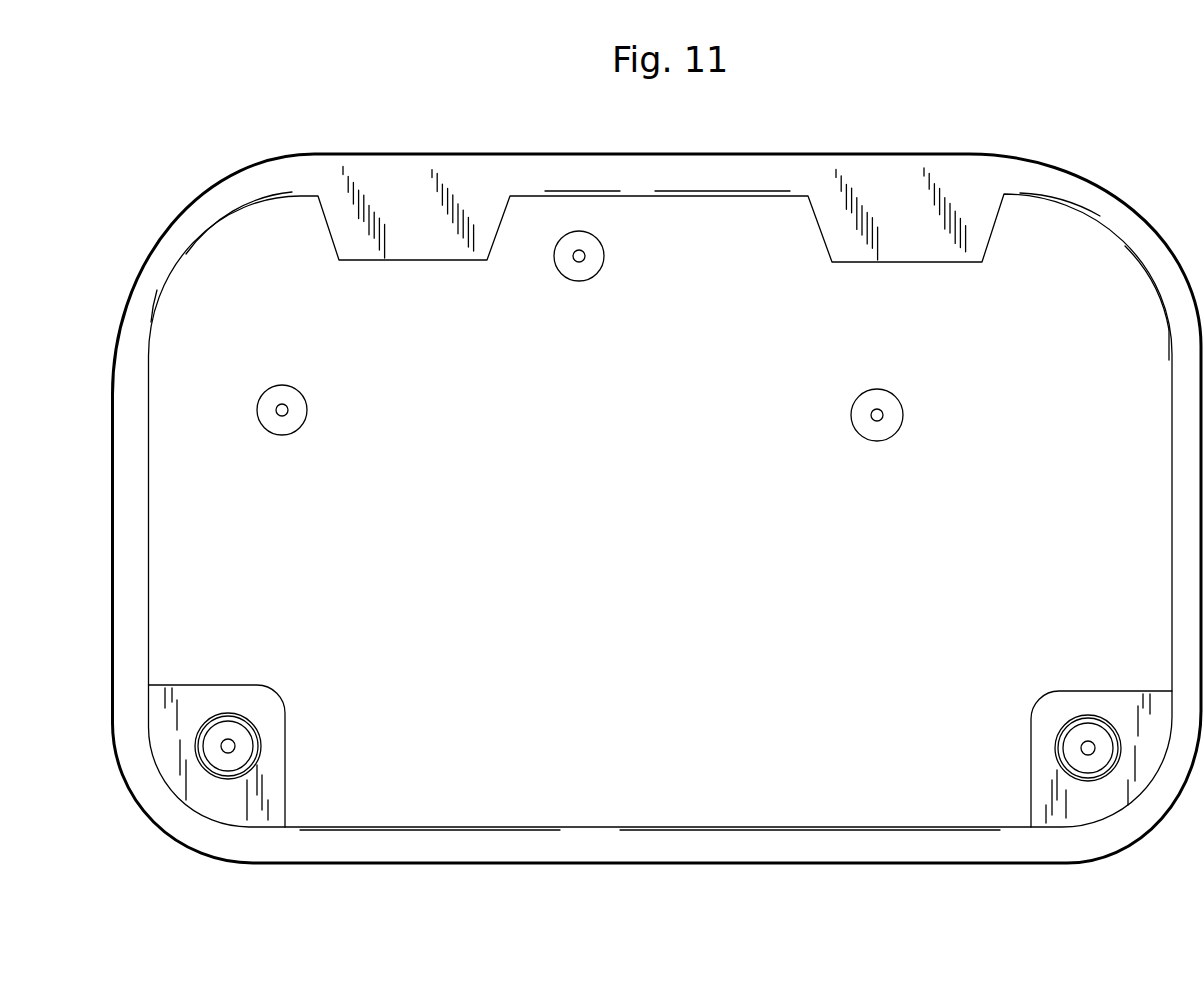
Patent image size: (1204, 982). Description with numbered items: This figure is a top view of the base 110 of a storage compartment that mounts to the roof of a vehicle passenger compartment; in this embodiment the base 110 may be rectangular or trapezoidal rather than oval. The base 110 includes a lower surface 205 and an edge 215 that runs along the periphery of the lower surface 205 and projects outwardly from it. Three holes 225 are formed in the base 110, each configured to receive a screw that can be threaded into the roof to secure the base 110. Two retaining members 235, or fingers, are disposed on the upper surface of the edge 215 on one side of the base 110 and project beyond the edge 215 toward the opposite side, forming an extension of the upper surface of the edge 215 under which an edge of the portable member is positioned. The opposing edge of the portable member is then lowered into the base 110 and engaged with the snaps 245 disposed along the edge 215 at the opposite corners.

The base 110 is at (163, 195).
The lower surface 205 is at (268, 241).
The edge 215 is at (355, 846).
The holes 225 is at (579, 262).
The retaining members 235 is at (417, 241).
The snaps 245 is at (226, 713).